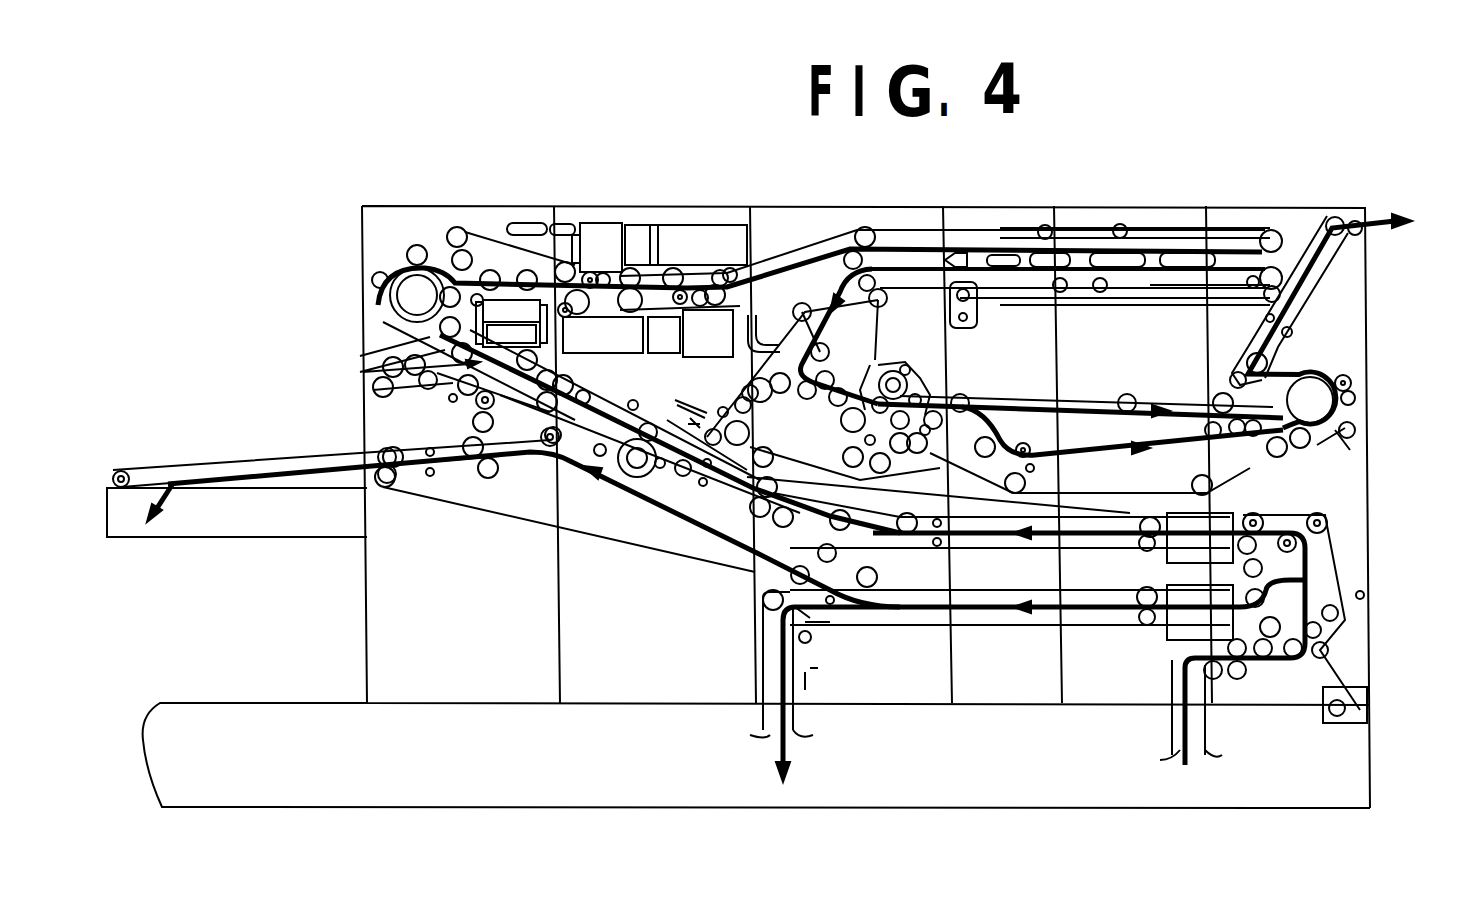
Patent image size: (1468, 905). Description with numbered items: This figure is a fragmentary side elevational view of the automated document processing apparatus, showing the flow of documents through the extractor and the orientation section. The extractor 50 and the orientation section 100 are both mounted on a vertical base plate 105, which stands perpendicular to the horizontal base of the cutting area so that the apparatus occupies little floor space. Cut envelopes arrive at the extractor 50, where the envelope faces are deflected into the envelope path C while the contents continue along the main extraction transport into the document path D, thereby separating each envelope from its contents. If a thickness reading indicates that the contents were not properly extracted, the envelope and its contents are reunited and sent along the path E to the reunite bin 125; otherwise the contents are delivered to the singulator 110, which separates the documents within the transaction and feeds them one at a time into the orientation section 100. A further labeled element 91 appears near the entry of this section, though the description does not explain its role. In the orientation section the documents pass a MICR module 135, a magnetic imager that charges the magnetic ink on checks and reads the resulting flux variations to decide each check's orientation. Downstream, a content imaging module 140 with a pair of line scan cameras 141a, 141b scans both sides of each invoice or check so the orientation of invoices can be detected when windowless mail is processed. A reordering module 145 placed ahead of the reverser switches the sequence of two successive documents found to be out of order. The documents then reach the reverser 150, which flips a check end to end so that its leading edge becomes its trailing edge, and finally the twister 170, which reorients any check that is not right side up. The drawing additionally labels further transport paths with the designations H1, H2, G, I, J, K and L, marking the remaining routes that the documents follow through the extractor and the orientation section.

The orientation section 100 is at (845, 217).
The vertical base plate 105 is at (478, 689).
The reunite bin 125 is at (210, 520).
The singulator 110 is at (612, 492).
The conveying roller 91 is at (443, 398).
The MICR module 135 is at (512, 256).
The line scan camera 141a is at (595, 247).
The content imaging module 140 is at (694, 203).
The line scan camera 141b is at (711, 331).
The reordering module 145 is at (1068, 233).
The reverser 150 is at (942, 353).
The twister 170 is at (1250, 455).
The extractor 50 is at (1332, 550).
The sheet path H1 is at (966, 256).
The sheet path H2 is at (1262, 207).
The sheet path G is at (1104, 266).
The sheet path J is at (792, 353).
The sheet path I is at (845, 444).
The sheet path L is at (1080, 392).
The sheet path K is at (1122, 453).
The document path D is at (1039, 629).
The envelope path C is at (1027, 679).
The reunite path E is at (523, 501).